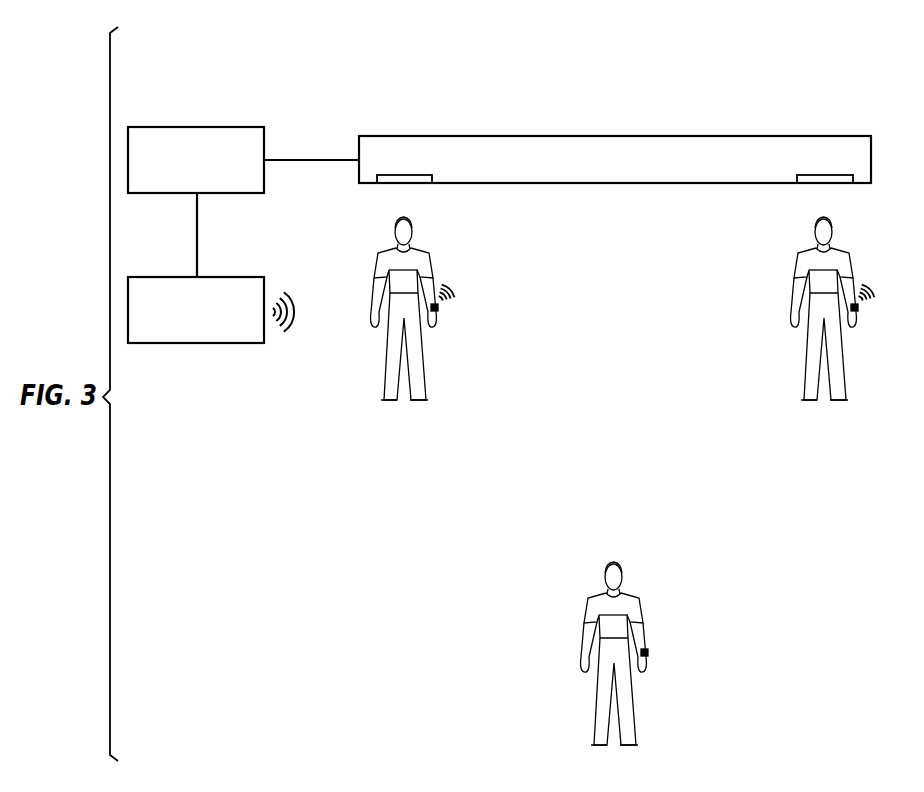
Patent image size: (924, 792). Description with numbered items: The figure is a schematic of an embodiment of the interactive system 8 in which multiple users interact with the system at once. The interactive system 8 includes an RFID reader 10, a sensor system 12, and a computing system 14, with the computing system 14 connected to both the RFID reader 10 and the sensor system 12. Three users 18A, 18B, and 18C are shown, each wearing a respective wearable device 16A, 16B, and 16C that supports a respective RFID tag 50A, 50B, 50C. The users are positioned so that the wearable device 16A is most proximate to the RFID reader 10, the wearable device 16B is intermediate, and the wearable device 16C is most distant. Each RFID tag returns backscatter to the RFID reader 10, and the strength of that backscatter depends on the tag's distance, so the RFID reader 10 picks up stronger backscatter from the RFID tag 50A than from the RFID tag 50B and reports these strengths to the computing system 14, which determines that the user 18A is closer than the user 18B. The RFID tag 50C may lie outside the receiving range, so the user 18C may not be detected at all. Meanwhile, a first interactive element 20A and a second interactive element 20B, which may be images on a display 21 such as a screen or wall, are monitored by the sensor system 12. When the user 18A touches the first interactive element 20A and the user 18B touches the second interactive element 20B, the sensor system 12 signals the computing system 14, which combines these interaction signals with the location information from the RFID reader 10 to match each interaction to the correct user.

The interactive system 8 is at (722, 62).
The RFID reader 10 is at (197, 343).
The sensor system 12 is at (463, 126).
The computing system 14 is at (197, 127).
The wearable device 16A is at (437, 313).
The wearable device 16B is at (857, 313).
The wearable device 16C is at (647, 658).
The user 18A is at (406, 218).
The user 18B is at (826, 218).
The user 18C is at (616, 563).
The first interactive element 20A is at (405, 175).
The second interactive element 20B is at (824, 175).
The display 21 is at (617, 183).
The RFID tag 50A is at (439, 307).
The RFID tag 50B is at (859, 307).
The RFID tag 50C is at (649, 652).